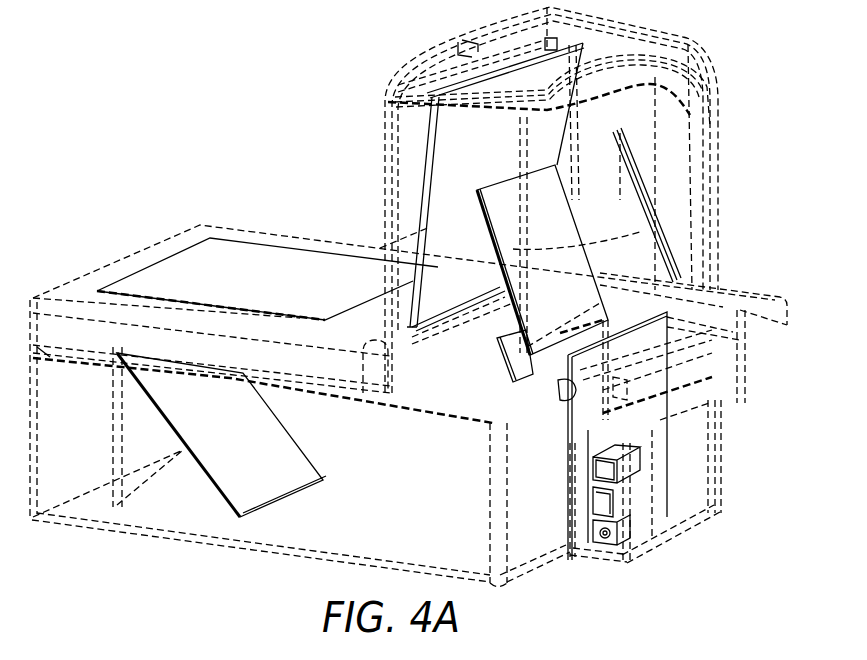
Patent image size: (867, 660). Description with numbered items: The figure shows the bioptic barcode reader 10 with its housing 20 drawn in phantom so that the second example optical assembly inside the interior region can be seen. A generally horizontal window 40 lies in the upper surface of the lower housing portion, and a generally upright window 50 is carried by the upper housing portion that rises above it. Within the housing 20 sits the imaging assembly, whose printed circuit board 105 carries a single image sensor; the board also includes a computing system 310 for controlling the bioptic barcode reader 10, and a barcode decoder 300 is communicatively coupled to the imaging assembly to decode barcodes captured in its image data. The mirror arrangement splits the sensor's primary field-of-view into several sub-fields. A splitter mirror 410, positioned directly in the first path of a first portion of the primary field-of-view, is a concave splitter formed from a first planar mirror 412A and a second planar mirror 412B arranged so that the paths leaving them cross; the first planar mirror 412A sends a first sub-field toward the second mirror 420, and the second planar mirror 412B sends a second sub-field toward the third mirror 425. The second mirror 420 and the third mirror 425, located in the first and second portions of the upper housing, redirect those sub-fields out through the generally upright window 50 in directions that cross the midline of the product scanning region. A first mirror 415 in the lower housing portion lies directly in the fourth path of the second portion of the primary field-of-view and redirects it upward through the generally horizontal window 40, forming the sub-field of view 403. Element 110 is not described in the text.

The bioptic barcode reader 10 is at (258, 50).
The housing 20 is at (728, 105).
The generally horizontal window 40 is at (230, 248).
The generally upright window 50 is at (443, 233).
The printed circuit board 105 is at (708, 420).
The housing mount 110 is at (493, 436).
The barcode decoder 300 is at (588, 530).
The computing system 310 is at (588, 540).
The sub-field of view 403 is at (231, 654).
The splitter mirror 410 is at (595, 398).
The first planar mirror 412A is at (527, 327).
The second planar mirror 412B is at (510, 377).
The first mirror 415 is at (282, 500).
The second mirror 420 is at (560, 213).
The third mirror 425 is at (647, 182).